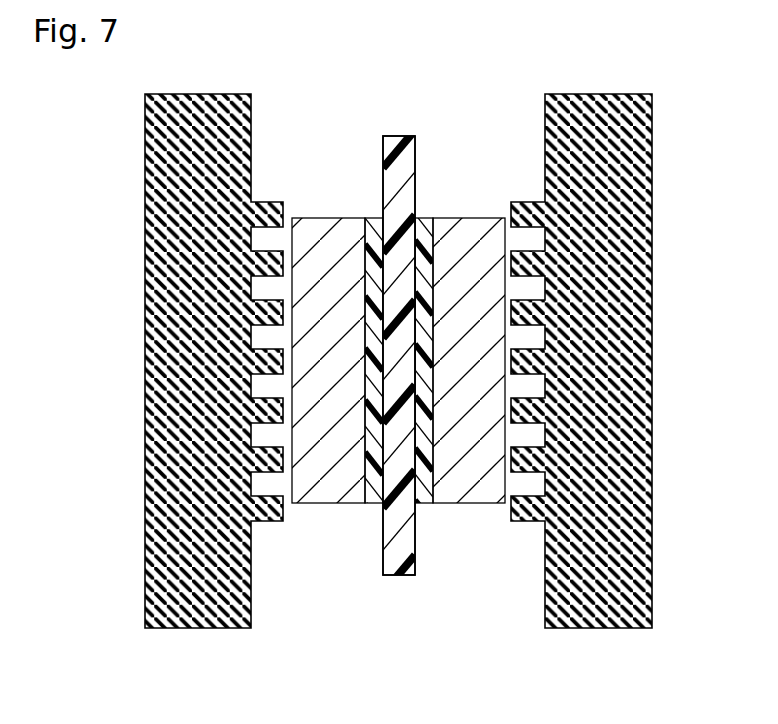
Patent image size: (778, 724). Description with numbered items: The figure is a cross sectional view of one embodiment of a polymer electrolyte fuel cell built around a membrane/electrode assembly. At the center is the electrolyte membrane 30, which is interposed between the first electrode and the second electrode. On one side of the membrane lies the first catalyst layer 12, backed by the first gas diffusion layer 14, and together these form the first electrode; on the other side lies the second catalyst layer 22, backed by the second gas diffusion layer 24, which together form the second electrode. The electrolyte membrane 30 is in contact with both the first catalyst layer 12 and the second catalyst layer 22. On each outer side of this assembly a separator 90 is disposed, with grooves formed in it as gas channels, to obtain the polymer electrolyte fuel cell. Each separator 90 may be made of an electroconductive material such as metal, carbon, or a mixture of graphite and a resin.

The separator 90 is at (207, 613).
The first gas diffusion layer 14 is at (333, 488).
The first catalyst layer 12 is at (375, 488).
The electrolyte membrane 30 is at (403, 577).
The second catalyst layer 22 is at (423, 495).
The second gas diffusion layer 24 is at (457, 472).